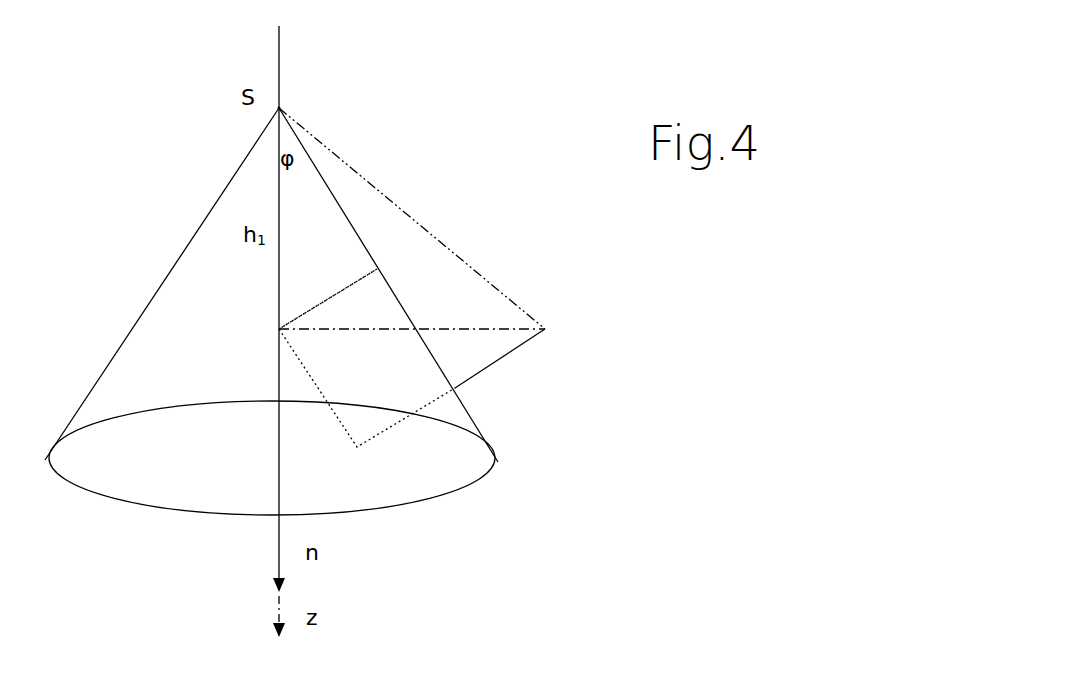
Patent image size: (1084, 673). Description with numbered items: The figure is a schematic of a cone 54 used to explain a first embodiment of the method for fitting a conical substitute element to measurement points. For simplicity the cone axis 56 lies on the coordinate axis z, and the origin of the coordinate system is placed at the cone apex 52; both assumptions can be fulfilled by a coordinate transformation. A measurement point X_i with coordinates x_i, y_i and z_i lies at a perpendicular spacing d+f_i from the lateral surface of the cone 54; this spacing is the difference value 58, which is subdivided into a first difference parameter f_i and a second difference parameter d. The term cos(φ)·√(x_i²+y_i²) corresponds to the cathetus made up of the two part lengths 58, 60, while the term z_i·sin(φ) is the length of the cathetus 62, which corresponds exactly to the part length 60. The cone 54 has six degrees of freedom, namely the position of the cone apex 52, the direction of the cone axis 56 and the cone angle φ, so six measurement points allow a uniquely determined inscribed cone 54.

The cone apex 52 is at (279, 108).
The cone 54 is at (148, 302).
The cone axis 56 is at (279, 532).
The difference value 58 is at (517, 350).
The part length 60 is at (397, 425).
The cathetus 62 is at (338, 292).